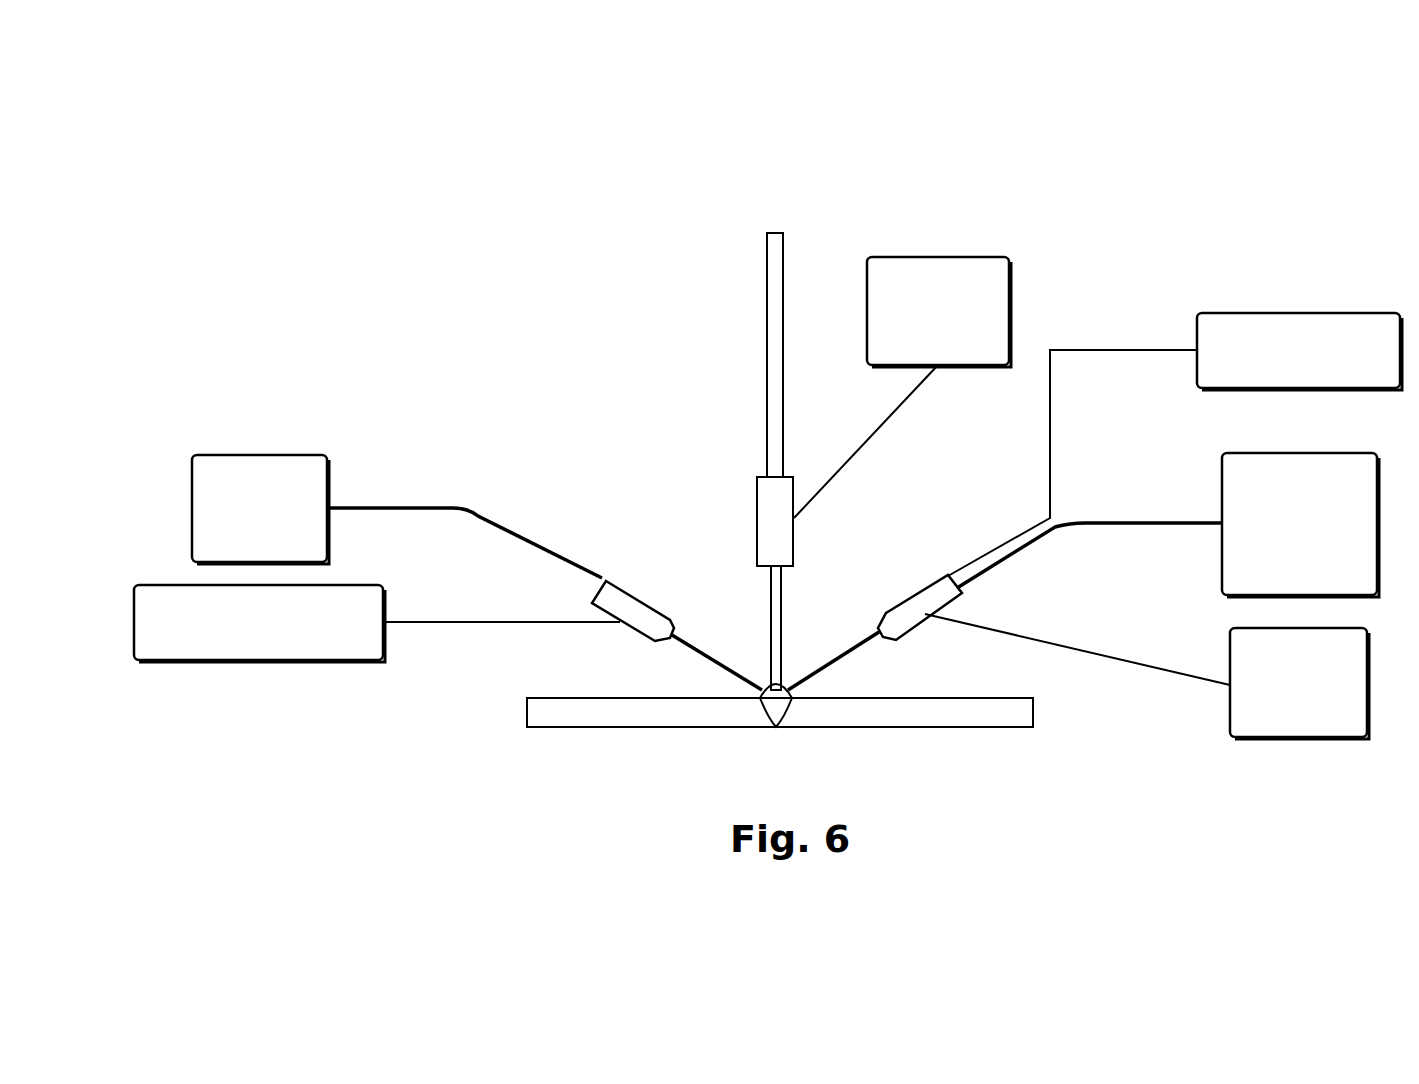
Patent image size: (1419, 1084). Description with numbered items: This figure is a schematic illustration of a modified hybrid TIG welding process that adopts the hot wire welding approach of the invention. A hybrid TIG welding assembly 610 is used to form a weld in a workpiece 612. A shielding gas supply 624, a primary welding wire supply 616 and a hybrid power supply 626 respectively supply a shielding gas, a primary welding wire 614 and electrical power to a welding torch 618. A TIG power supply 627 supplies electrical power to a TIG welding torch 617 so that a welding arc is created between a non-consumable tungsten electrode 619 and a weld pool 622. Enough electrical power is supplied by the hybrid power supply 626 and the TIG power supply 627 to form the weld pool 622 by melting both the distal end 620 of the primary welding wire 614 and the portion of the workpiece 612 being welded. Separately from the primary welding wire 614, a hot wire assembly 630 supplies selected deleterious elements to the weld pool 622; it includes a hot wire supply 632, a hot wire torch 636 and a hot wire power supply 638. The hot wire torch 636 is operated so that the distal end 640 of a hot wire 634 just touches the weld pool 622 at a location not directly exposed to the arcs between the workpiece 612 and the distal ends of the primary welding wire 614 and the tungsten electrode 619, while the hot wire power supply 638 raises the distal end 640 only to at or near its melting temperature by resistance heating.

The hybrid TIG welding assembly 610 is at (1144, 206).
The workpiece 612 is at (912, 712).
The primary welding wire 614 is at (1037, 545).
The primary welding wire supply 616 is at (1222, 495).
The TIG welding torch 617 is at (757, 518).
The welding torch 618 is at (913, 593).
The non-consumable tungsten electrode 619 is at (781, 640).
The distal end of primary welding wire 620 is at (857, 655).
The weld pool 622 is at (792, 706).
The shielding gas supply 624 is at (1300, 313).
The hybrid power supply 626 is at (1298, 737).
The TIG power supply 627 is at (937, 257).
The hot wire assembly 630 is at (429, 370).
The hot wire supply 632 is at (257, 453).
The hot wire 634 is at (502, 527).
The hot wire torch 636 is at (638, 597).
The hot wire power supply 638 is at (257, 660).
The distal end of hot wire 640 is at (700, 660).